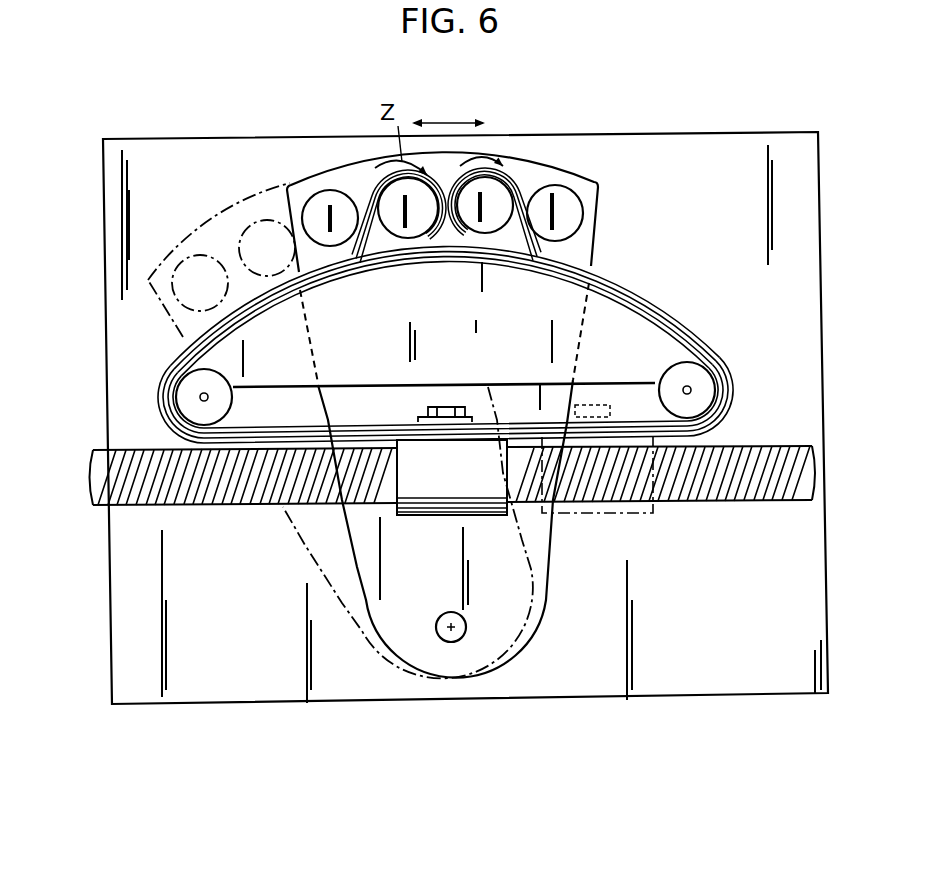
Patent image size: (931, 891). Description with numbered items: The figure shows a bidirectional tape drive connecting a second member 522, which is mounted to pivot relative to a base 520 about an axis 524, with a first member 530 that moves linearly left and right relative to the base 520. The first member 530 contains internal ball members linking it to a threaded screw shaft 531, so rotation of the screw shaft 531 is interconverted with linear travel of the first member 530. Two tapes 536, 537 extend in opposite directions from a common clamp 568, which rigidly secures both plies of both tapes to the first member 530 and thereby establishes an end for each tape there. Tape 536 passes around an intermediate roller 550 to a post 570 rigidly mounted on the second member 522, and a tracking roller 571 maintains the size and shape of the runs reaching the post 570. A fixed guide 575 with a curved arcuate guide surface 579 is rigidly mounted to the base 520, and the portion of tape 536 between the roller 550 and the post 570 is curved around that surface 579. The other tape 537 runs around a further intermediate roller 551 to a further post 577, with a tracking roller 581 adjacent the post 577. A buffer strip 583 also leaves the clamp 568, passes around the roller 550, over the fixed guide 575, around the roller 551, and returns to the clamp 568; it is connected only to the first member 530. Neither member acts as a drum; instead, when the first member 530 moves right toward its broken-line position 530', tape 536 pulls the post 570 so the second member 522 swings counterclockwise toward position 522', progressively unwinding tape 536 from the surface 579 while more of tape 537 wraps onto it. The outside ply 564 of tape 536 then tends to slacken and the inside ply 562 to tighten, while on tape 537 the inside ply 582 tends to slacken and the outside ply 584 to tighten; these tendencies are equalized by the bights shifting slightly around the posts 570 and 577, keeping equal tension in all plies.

The base 520 is at (737, 692).
The second member 522 is at (478, 414).
The moved position of second member 522' is at (289, 430).
The axis 524 is at (458, 633).
The first member 530 is at (514, 520).
The moved position of first member 530' is at (629, 497).
The threaded screw shaft 531 is at (775, 500).
The tape 536 is at (255, 443).
The tape 537 is at (654, 418).
The intermediate roller 550 is at (193, 415).
The intermediate roller 551 is at (703, 393).
The inside ply 562 is at (233, 320).
The outside ply 564 is at (180, 330).
The common clamp 568 is at (447, 410).
The post 570 is at (377, 193).
The tracking roller 571 is at (307, 211).
The fixed guide 575 is at (290, 367).
The post 577 is at (490, 197).
The arcuate guide surface 579 is at (400, 240).
The tracking roller 581 is at (552, 198).
The ply 582 is at (660, 303).
The buffer strip 583 is at (447, 173).
The ply 584 is at (662, 302).